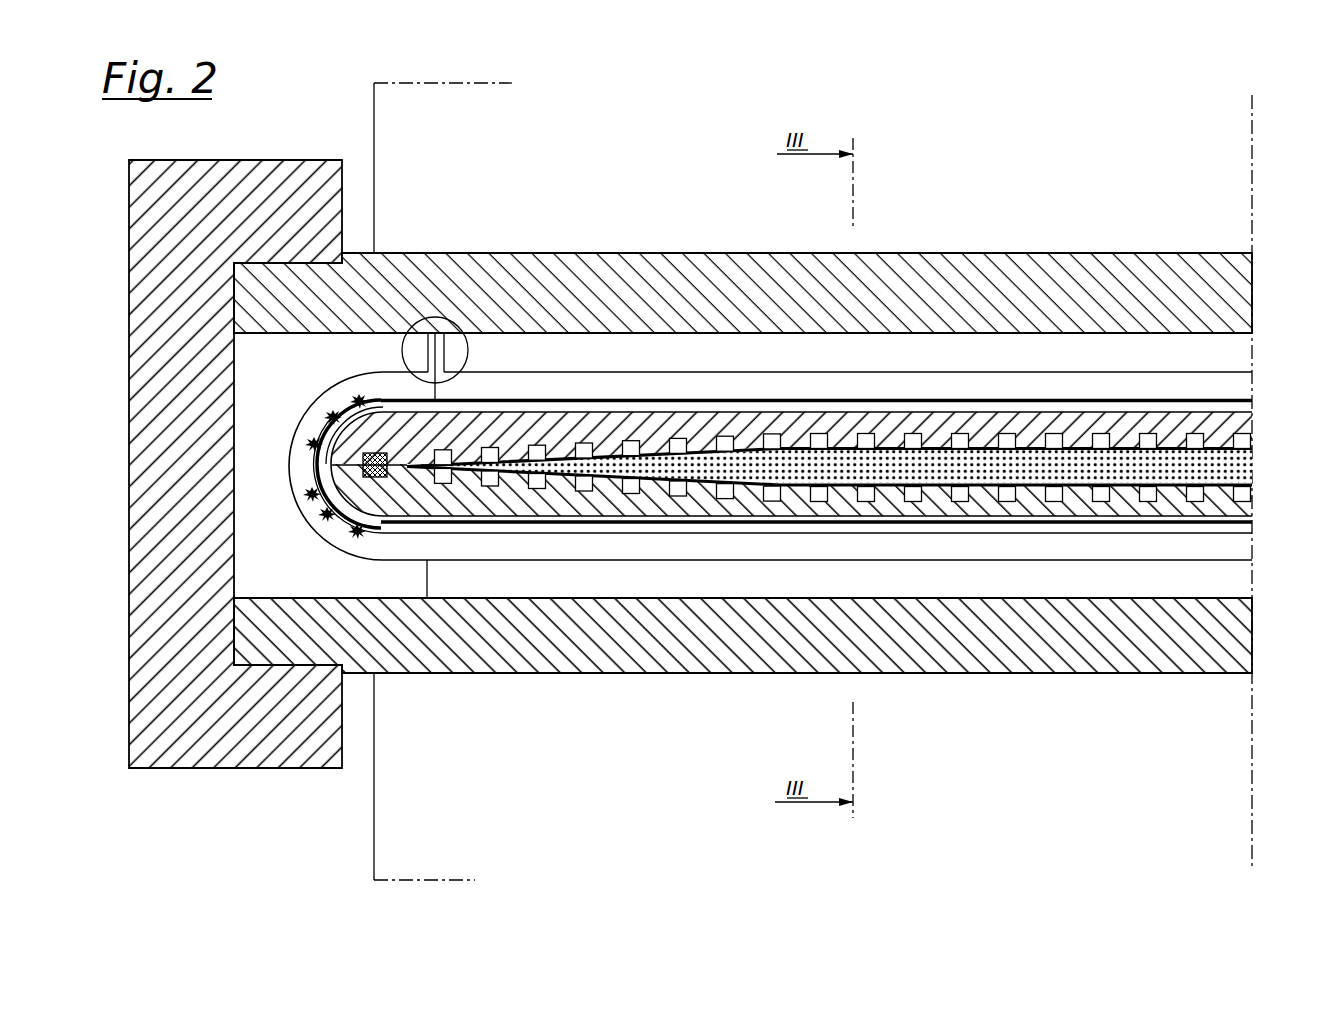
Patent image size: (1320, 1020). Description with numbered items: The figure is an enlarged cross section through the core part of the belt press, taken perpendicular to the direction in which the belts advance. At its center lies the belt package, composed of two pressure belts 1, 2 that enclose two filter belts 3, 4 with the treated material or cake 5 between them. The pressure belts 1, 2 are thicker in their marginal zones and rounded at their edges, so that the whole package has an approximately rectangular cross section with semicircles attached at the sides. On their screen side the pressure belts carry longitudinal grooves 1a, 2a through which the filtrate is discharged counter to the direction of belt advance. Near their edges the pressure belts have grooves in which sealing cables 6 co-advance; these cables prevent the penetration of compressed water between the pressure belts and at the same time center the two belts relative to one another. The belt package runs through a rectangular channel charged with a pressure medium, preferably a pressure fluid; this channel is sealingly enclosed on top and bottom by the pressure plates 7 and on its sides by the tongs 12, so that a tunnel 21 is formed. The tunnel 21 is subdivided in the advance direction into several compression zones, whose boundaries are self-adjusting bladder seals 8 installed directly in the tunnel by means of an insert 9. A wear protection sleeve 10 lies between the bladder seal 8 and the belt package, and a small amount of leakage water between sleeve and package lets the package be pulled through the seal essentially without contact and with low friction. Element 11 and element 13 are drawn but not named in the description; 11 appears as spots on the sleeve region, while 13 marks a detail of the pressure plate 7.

The pressure belt 1 is at (1243, 422).
The longitudinal grooves 1a is at (961, 441).
The pressure belt 2 is at (1238, 510).
The longitudinal grooves 2a is at (963, 498).
The filter belt 3 is at (1245, 448).
The filter belt 4 is at (1247, 487).
The treated material or cake 5 is at (1233, 467).
The sealing cable 6 is at (362, 472).
The pressure plate 7 is at (955, 280).
The bladder seal 8 is at (713, 548).
The insert 9 is at (730, 350).
The wear protection sleeve 10 is at (583, 399).
The joint spots 11 is at (358, 400).
The tongs 12 is at (160, 276).
The slot 13 is at (440, 320).
The tunnel 21 is at (610, 338).